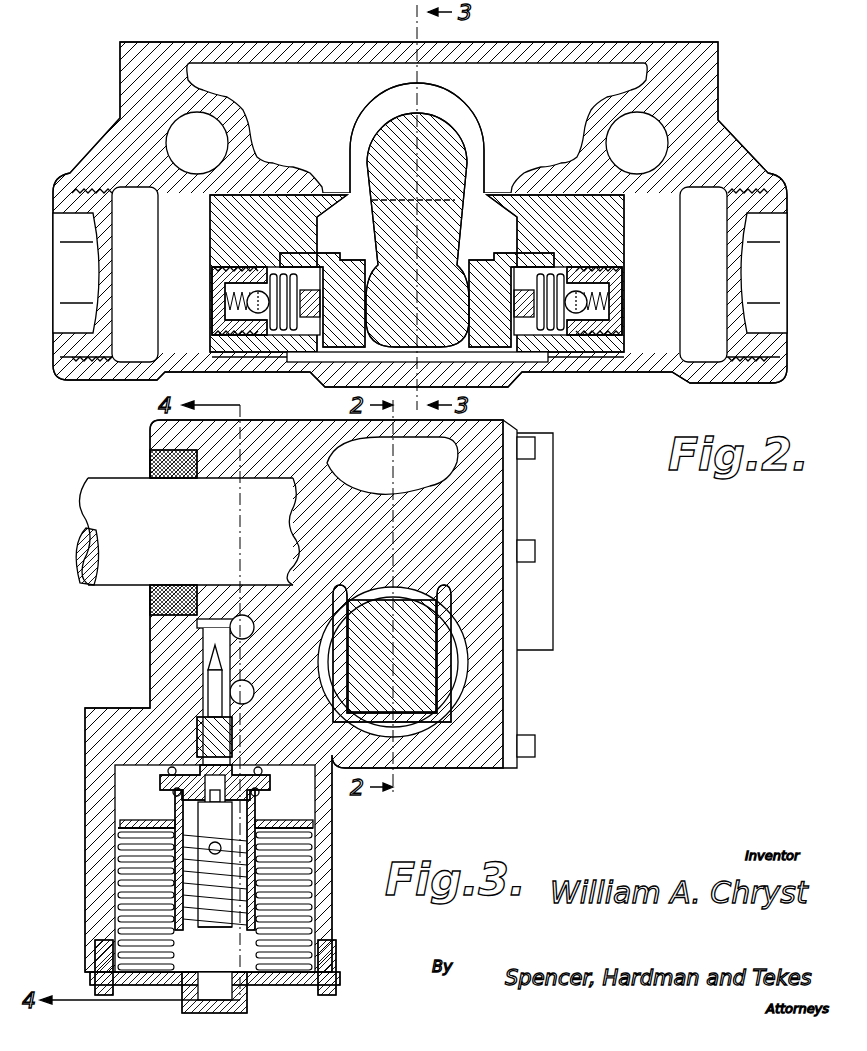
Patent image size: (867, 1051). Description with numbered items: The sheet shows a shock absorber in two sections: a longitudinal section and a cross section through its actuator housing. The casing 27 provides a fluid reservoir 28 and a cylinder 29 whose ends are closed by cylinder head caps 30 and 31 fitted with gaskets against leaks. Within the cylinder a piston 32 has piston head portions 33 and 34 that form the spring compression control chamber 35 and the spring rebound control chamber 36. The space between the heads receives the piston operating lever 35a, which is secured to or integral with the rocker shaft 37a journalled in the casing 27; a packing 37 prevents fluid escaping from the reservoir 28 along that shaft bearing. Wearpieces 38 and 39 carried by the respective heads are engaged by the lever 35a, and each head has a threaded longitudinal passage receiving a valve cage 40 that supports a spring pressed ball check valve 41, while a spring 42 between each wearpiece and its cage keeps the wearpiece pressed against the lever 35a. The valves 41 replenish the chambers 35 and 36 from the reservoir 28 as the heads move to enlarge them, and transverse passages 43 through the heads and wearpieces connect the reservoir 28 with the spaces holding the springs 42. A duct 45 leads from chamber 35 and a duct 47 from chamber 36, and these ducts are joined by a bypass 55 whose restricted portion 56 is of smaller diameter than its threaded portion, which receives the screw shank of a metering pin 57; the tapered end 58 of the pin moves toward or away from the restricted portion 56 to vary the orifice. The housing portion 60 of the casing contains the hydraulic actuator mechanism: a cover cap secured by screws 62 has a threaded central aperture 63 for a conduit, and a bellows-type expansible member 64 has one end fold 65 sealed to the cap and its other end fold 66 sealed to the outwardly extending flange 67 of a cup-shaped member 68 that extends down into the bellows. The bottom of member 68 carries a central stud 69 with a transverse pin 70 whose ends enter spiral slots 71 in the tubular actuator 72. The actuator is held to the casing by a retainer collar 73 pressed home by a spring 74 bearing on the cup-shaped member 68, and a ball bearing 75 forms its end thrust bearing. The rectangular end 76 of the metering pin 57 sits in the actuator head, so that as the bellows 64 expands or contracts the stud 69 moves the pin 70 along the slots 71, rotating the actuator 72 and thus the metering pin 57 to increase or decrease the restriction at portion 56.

In FIG. 2, the casing 27 is at (698, 78).
In FIG. 3, the casing 27 is at (470, 770).
In FIG. 2, the fluid reservoir 28 is at (310, 84).
In FIG. 3, the fluid reservoir 28 is at (365, 455).
In FIG. 2, the cylinder 29 is at (583, 367).
In FIG. 3, the cylinder 29 is at (470, 672).
In FIG. 2, the cylinder head cap 30 is at (62, 202).
In FIG. 2, the cylinder head cap 31 is at (775, 203).
In FIG. 2, the piston 32 is at (470, 223).
In FIG. 3, the piston 32 is at (455, 635).
In FIG. 2, the piston head portion 33 is at (224, 214).
In FIG. 2, the piston head portion 34 is at (610, 217).
In FIG. 2, the spring compression control chamber 35 is at (128, 260).
In FIG. 2, the piston operating lever 35a is at (403, 247).
In FIG. 2, the spring rebound control chamber 36 is at (705, 233).
In FIG. 3, the packing 37 is at (176, 598).
In FIG. 2, the rocker shaft 37a is at (447, 113).
In FIG. 3, the rocker shaft 37a is at (118, 492).
In FIG. 2, the wearpiece 38 is at (358, 268).
In FIG. 2, the wearpiece 39 is at (481, 268).
In FIG. 2, the valve cage 40 is at (216, 279).
In FIG. 2, the ball check valve 41 is at (248, 303).
In FIG. 2, the spring 42 is at (280, 332).
In FIG. 2, the transverse passage 43 is at (540, 360).
In FIG. 3, the duct 45 is at (247, 625).
In FIG. 3, the duct 47 is at (246, 697).
In FIG. 3, the bypass 55 is at (207, 686).
In FIG. 3, the restricted portion 56 is at (217, 640).
In FIG. 3, the metering pin 57 is at (210, 733).
In FIG. 3, the tapered end 58 is at (208, 668).
In FIG. 3, the housing portion 60 is at (112, 796).
In FIG. 3, the screw 62 is at (97, 994).
In FIG. 3, the central aperture 63 is at (222, 1005).
In FIG. 3, the expansible member 64 is at (306, 917).
In FIG. 3, the end fold 65 is at (300, 986).
In FIG. 3, the end fold 66 is at (318, 833).
In FIG. 3, the outwardly extending flange 67 is at (300, 822).
In FIG. 3, the cup-shaped member 68 is at (250, 900).
In FIG. 3, the central stud 69 is at (210, 920).
In FIG. 3, the transverse pin 70 is at (215, 880).
In FIG. 3, the spiral slot 71 is at (212, 790).
In FIG. 3, the actuator 72 is at (178, 817).
In FIG. 3, the retainer collar 73 is at (165, 779).
In FIG. 3, the spring 74 is at (250, 818).
In FIG. 3, the ball bearing 75 is at (165, 770).
In FIG. 3, the rectangular end 76 is at (216, 782).